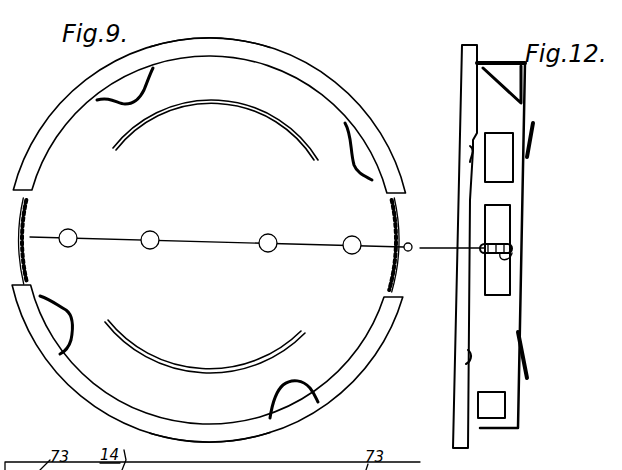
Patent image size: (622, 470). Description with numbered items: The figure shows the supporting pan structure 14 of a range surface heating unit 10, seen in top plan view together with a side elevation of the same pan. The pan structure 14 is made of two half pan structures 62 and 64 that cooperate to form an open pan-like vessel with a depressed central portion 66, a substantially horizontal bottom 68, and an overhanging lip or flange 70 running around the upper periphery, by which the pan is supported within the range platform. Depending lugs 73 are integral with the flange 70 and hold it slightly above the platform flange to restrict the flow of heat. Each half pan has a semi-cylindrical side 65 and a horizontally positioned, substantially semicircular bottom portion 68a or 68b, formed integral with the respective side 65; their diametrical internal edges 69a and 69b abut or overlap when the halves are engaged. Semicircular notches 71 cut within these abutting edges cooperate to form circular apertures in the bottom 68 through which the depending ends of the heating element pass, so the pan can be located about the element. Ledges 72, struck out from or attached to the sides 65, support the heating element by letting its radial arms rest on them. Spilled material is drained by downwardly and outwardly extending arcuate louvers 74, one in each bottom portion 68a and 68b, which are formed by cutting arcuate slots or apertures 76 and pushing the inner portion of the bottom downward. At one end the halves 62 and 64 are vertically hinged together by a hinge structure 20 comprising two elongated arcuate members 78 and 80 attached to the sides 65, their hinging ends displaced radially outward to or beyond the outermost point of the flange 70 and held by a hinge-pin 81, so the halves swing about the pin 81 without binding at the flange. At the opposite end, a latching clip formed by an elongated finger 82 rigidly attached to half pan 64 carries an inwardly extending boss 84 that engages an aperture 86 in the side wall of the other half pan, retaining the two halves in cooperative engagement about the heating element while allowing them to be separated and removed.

In FIG. 9, the range surface heating unit 10 is at (70, 86).
In FIG. 12, the range surface heating unit 10 is at (446, 78).
In FIG. 9, the supporting pan structure 14 is at (315, 100).
In FIG. 12, the supporting pan structure 14 is at (476, 106).
In FIG. 9, the hinge structure 20 is at (444, 248).
In FIG. 12, the hinge structure 20 is at (502, 259).
In FIG. 9, the half pan structure 62 is at (78, 155).
In FIG. 9, the half pan structure 64 is at (88, 368).
In FIG. 9, the semi-cylindrical sides 65 is at (298, 78).
In FIG. 12, the semi-cylindrical sides 65 is at (493, 63).
In FIG. 9, the depressed central portion 66 is at (202, 68).
In FIG. 12, the depressed central portion 66 is at (513, 78).
In FIG. 9, the bottom 68 is at (250, 195).
In FIG. 9, the bottom portion 68a is at (191, 224).
In FIG. 9, the bottom portion 68b is at (186, 268).
In FIG. 9, the diametrical internal edge 69a is at (110, 238).
In FIG. 9, the diametrical internal edge 69b is at (128, 244).
In FIG. 9, the overhanging lip or flange 70 is at (378, 146).
In FIG. 12, the overhanging lip or flange 70 is at (466, 138).
In FIG. 9, the semicircular notches 71 is at (76, 232).
In FIG. 9, the ledges 72 is at (110, 104).
In FIG. 12, the ledges 72 is at (505, 170).
In FIG. 12, the depending lugs 73 is at (474, 150).
In FIG. 9, the arcuate louvers 74 is at (222, 114).
In FIG. 12, the arcuate louvers 74 is at (530, 143).
In FIG. 9, the arcuate slots or apertures 76 is at (178, 118).
In FIG. 9, the elongated arcuate member 78 is at (393, 290).
In FIG. 12, the elongated arcuate member 78 is at (500, 287).
In FIG. 9, the elongated arcuate member 80 is at (395, 205).
In FIG. 12, the elongated arcuate member 80 is at (506, 219).
In FIG. 9, the hinge-pin 81 is at (410, 251).
In FIG. 12, the hinge-pin 81 is at (512, 249).
In FIG. 9, the elongated finger 82 is at (24, 224).
In FIG. 9, the inwardly extending boss 84 is at (30, 228).
In FIG. 9, the aperture 86 is at (30, 252).